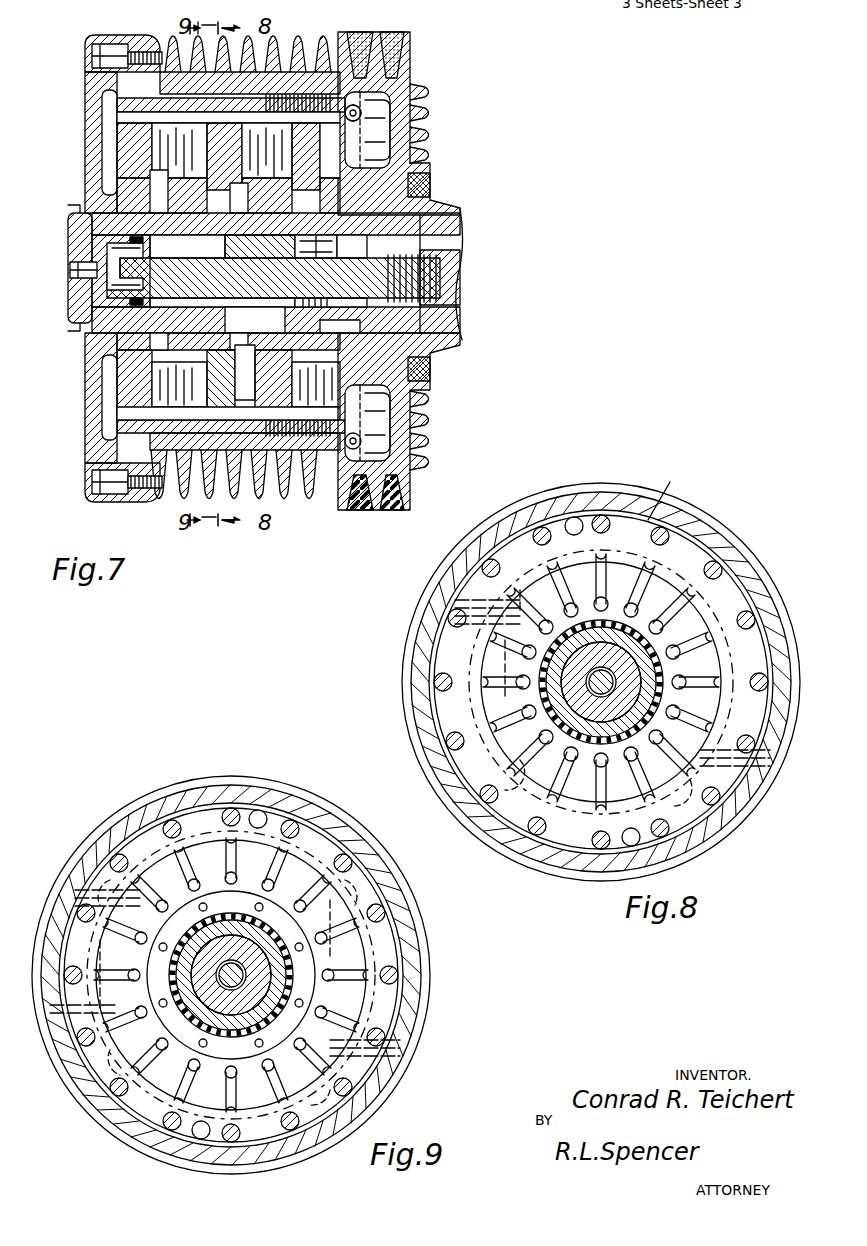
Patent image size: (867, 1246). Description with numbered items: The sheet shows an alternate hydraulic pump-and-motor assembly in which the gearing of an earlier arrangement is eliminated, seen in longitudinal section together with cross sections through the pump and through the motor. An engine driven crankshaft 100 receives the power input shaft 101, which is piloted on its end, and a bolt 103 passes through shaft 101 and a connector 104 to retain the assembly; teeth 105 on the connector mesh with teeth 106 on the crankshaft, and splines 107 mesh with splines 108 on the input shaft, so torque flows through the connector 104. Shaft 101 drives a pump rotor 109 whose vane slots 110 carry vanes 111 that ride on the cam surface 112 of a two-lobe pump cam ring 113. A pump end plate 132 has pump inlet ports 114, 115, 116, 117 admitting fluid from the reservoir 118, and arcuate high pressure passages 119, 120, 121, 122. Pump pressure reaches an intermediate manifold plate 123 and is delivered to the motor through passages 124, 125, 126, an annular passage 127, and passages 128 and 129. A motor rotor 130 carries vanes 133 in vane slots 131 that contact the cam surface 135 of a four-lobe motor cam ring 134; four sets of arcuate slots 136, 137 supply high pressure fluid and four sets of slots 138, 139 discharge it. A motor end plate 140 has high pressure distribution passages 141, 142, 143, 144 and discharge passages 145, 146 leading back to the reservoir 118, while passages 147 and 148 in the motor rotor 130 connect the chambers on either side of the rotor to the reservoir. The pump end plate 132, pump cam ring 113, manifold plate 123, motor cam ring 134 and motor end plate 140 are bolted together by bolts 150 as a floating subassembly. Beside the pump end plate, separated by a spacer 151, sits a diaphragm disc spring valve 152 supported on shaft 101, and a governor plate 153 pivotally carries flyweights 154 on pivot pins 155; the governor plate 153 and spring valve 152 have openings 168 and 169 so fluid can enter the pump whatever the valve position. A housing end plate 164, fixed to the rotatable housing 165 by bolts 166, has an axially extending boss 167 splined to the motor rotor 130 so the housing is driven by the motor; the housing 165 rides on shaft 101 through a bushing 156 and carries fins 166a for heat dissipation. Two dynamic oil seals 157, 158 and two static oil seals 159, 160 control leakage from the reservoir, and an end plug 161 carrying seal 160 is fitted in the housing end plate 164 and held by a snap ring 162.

In FIG. 7, the engine driven crankshaft 100 is at (452, 222).
In FIG. 7, the power input shaft 101 is at (430, 340).
In FIG. 8, the power input shaft 101 is at (570, 730).
In FIG. 9, the power input shaft 101 is at (262, 935).
In FIG. 7, the bolt 103 is at (350, 288).
In FIG. 8, the bolt 103 is at (605, 690).
In FIG. 9, the bolt 103 is at (218, 1025).
In FIG. 7, the connector 104 is at (300, 246).
In FIG. 7, the teeth 105 is at (400, 300).
In FIG. 7, the teeth 106 is at (320, 328).
In FIG. 7, the splines 107 is at (350, 237).
In FIG. 7, the splines 108 is at (316, 237).
In FIG. 7, the pump rotor 109 is at (290, 228).
In FIG. 8, the pump rotor 109 is at (482, 655).
In FIG. 8, the vane slots 110 is at (568, 600).
In FIG. 7, the vanes 111 is at (298, 390).
In FIG. 8, the vanes 111 is at (594, 575).
In FIG. 8, the cam surface 112 is at (640, 565).
In FIG. 8, the pump cam ring 113 is at (669, 494).
In FIG. 7, the pump inlet port 114 is at (265, 140).
In FIG. 8, the pump inlet port 114 is at (552, 578).
In FIG. 8, the pump inlet port 115 is at (668, 806).
In FIG. 7, the pump inlet port 116 is at (272, 195).
In FIG. 8, the pump inlet port 116 is at (522, 633).
In FIG. 8, the pump inlet port 117 is at (662, 745).
In FIG. 7, the reservoir 118 is at (104, 120).
In FIG. 8, the high pressure passage 119 is at (528, 790).
In FIG. 8, the high pressure passage 120 is at (525, 720).
In FIG. 8, the high pressure passage 121 is at (676, 585).
In FIG. 8, the high pressure passage 122 is at (672, 642).
In FIG. 7, the intermediate manifold plate 123 is at (210, 435).
In FIG. 7, the passage 124 is at (275, 425).
In FIG. 8, the passage 124 is at (675, 690).
In FIG. 7, the passage 125 is at (218, 385).
In FIG. 7, the passage 126 is at (215, 312).
In FIG. 7, the annular passage 127 is at (262, 115).
In FIG. 7, the passage 128 is at (180, 135).
In FIG. 7, the passage 129 is at (225, 160).
In FIG. 7, the motor rotor 130 is at (178, 365).
In FIG. 9, the motor rotor 130 is at (112, 960).
In FIG. 9, the vane slots 131 is at (238, 855).
In FIG. 7, the pump end plate 132 is at (270, 400).
In FIG. 7, the vanes 133 is at (150, 140).
In FIG. 9, the vanes 133 is at (330, 930).
In FIG. 7, the motor cam ring 134 is at (170, 470).
In FIG. 9, the motor cam ring 134 is at (330, 835).
In FIG. 9, the cam surface 135 is at (300, 800).
In FIG. 9, the arcuate slots 136 is at (112, 890).
In FIG. 9, the arcuate slots 137 is at (145, 930).
In FIG. 9, the slots 138 is at (210, 835).
In FIG. 9, the slots 139 is at (236, 975).
In FIG. 7, the motor end plate 140 is at (110, 398).
In FIG. 7, the high pressure distribution passage 141 is at (120, 142).
In FIG. 7, the high pressure distribution passage 142 is at (120, 165).
In FIG. 7, the high pressure distribution passage 143 is at (114, 412).
In FIG. 7, the high pressure distribution passage 144 is at (140, 352).
In FIG. 7, the pressure discharge passage 145 is at (102, 104).
In FIG. 7, the pressure discharge passage 146 is at (104, 432).
In FIG. 7, the passage 147 is at (206, 290).
In FIG. 7, the passage 148 is at (200, 237).
In FIG. 7, the bolts 150 is at (135, 100).
In FIG. 8, the bolts 150 is at (546, 835).
In FIG. 9, the bolts 150 is at (372, 940).
In FIG. 7, the spacer 151 is at (270, 368).
In FIG. 7, the diaphragm disc spring valve 152 is at (335, 385).
In FIG. 7, the governor plate 153 is at (380, 200).
In FIG. 7, the flyweights 154 is at (378, 150).
In FIG. 7, the pivot pins 155 is at (353, 105).
In FIG. 7, the bushing 156 is at (312, 320).
In FIG. 7, the dynamic oil seal 157 is at (430, 368).
In FIG. 9, the dynamic oil seal 157 is at (278, 960).
In FIG. 7, the dynamic oil seal 158 is at (140, 305).
In FIG. 7, the static oil seal 159 is at (96, 75).
In FIG. 7, the static oil seal 160 is at (78, 328).
In FIG. 7, the end plug 161 is at (70, 272).
In FIG. 7, the snap ring 162 is at (80, 210).
In FIG. 7, the housing end plate 164 is at (95, 358).
In FIG. 7, the housing 165 is at (395, 92).
In FIG. 8, the housing 165 is at (718, 540).
In FIG. 9, the housing 165 is at (195, 775).
In FIG. 7, the bolts 166 is at (92, 482).
In FIG. 7, the fins 166a is at (306, 520).
In FIG. 8, the fins 166a is at (705, 515).
In FIG. 9, the fins 166a is at (232, 775).
In FIG. 7, the boss 167 is at (236, 288).
In FIG. 7, the openings 168 is at (372, 185).
In FIG. 7, the openings 169 is at (330, 188).